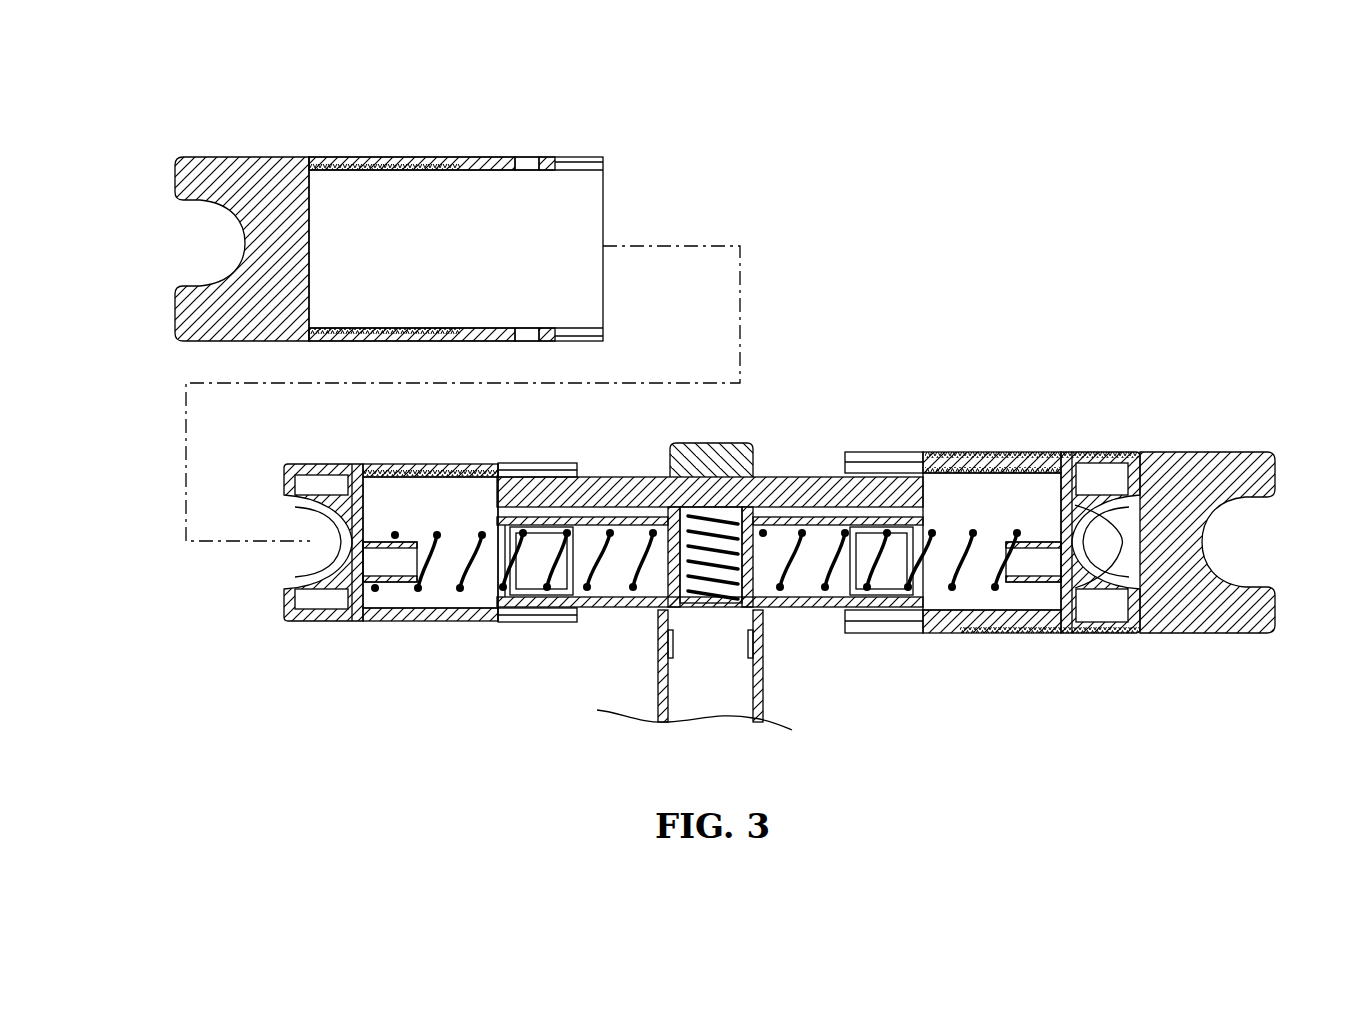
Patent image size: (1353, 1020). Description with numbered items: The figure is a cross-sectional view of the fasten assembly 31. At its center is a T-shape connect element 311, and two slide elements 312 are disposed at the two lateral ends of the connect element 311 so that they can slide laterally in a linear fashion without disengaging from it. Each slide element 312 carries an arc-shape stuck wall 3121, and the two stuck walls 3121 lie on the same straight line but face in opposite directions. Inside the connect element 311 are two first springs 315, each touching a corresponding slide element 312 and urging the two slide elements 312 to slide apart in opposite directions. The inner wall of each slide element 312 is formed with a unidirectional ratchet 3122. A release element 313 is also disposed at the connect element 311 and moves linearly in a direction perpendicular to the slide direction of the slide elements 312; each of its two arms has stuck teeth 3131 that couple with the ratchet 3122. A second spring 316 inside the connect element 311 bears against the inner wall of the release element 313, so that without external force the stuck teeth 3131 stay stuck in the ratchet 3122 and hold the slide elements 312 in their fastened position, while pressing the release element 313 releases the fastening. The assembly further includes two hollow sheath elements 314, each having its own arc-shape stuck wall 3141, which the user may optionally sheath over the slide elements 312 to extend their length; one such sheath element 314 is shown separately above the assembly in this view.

The fasten assembly 31 is at (836, 347).
The T-shape connect element 311 is at (655, 480).
The slide element 312 is at (375, 624).
The release element 313 is at (765, 482).
The sheath element 314 is at (273, 183).
The first spring 315 is at (470, 575).
The second spring 316 is at (710, 553).
The arc-shape stuck wall 3121 is at (350, 537).
The unidirectional ratchet 3122 is at (427, 472).
The stuck teeth 3131 is at (533, 490).
The arc-shape stuck wall 3141 is at (243, 247).